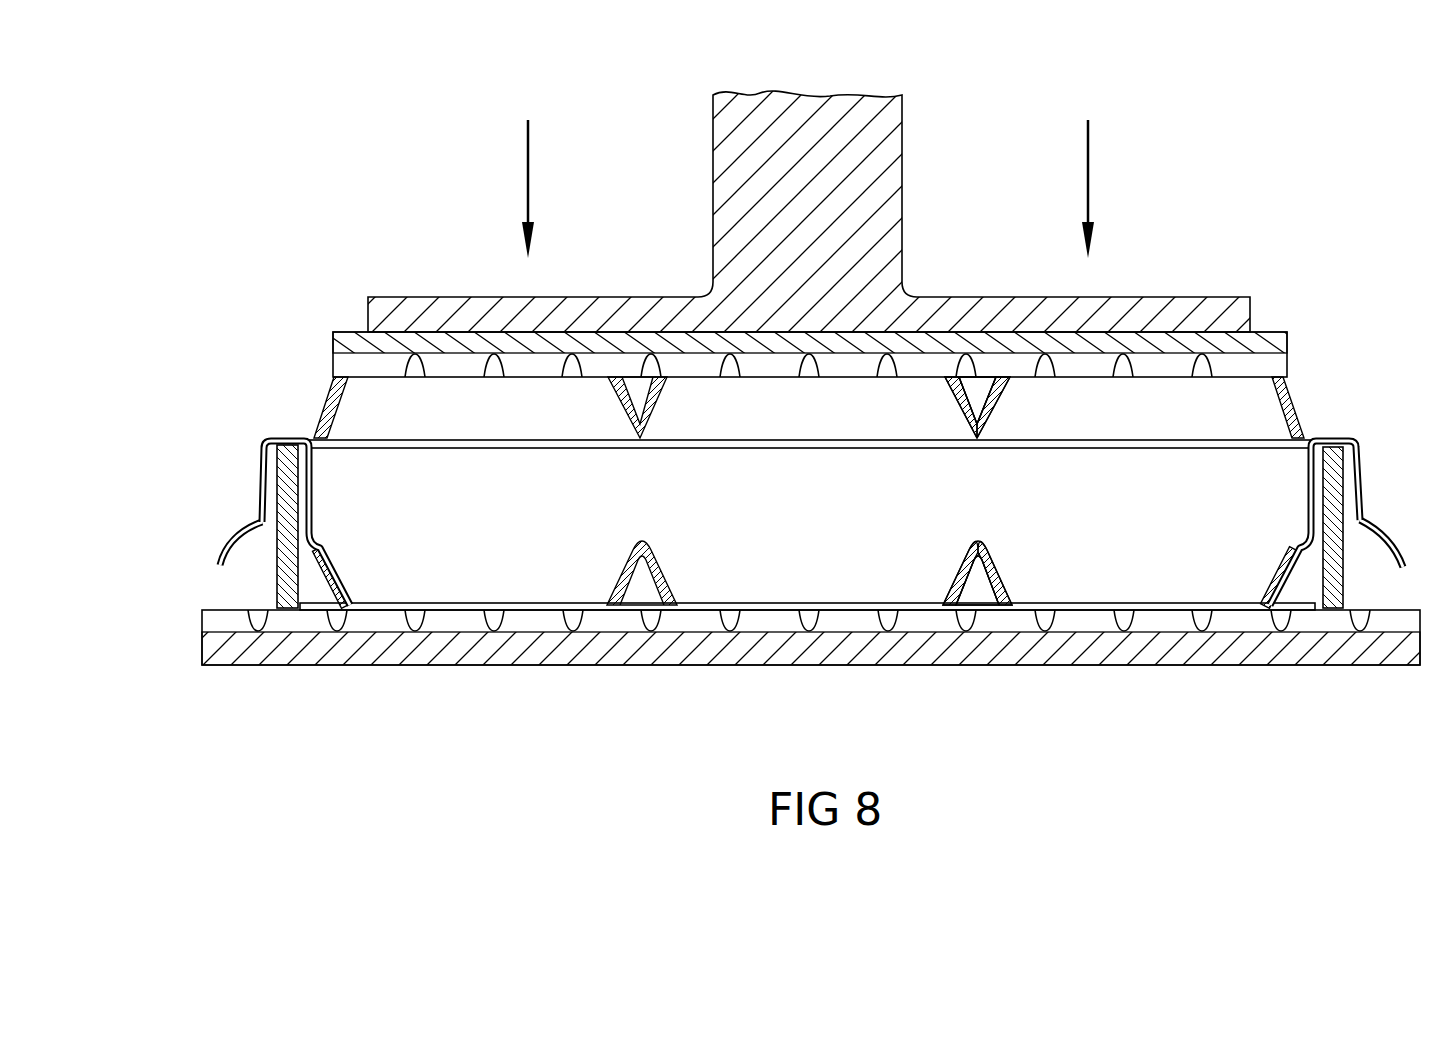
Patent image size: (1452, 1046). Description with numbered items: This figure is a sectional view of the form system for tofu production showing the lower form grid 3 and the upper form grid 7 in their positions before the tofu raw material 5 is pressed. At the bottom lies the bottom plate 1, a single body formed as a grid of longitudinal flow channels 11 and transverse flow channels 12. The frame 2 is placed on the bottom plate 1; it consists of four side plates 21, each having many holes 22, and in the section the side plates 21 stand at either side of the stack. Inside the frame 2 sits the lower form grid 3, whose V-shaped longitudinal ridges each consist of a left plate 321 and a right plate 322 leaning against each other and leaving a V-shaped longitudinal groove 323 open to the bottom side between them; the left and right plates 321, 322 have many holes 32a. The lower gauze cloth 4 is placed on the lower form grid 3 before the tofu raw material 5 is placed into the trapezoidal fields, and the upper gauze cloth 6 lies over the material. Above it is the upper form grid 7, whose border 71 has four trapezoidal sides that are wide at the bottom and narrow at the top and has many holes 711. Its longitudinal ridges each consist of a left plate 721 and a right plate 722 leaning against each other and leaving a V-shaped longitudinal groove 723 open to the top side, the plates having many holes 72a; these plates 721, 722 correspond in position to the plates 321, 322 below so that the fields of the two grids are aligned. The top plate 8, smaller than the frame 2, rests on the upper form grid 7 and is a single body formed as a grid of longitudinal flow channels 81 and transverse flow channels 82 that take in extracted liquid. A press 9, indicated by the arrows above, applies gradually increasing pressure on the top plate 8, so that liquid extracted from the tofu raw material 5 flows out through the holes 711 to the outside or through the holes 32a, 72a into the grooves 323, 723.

The bottom plate 1 is at (778, 639).
The frame 2 is at (814, 519).
The lower form grid 3 is at (350, 583).
The lower gauze cloth 4 is at (493, 605).
The tofu raw material 5 is at (805, 588).
The upper gauze cloth 6 is at (557, 448).
The upper form grid 7 is at (832, 360).
The top plate 8 is at (857, 281).
The press 9 is at (468, 305).
The longitudinal flow channels 11 is at (417, 618).
The transverse flow channels 12 is at (457, 623).
The side plates 21 is at (1328, 493).
The holes 22 is at (1332, 560).
The holes 32a is at (972, 662).
The left plate 321 is at (950, 598).
The right plate 322 is at (1005, 585).
The V-shaped longitudinal groove 323 is at (970, 597).
The border 71 is at (1344, 386).
The holes 711 is at (1295, 418).
The holes 72a is at (998, 410).
The left plate 721 is at (960, 408).
The right plate 722 is at (993, 400).
The V-shaped longitudinal groove 723 is at (973, 393).
The longitudinal flow channels 81 is at (572, 350).
The transverse flow channels 82 is at (1267, 362).